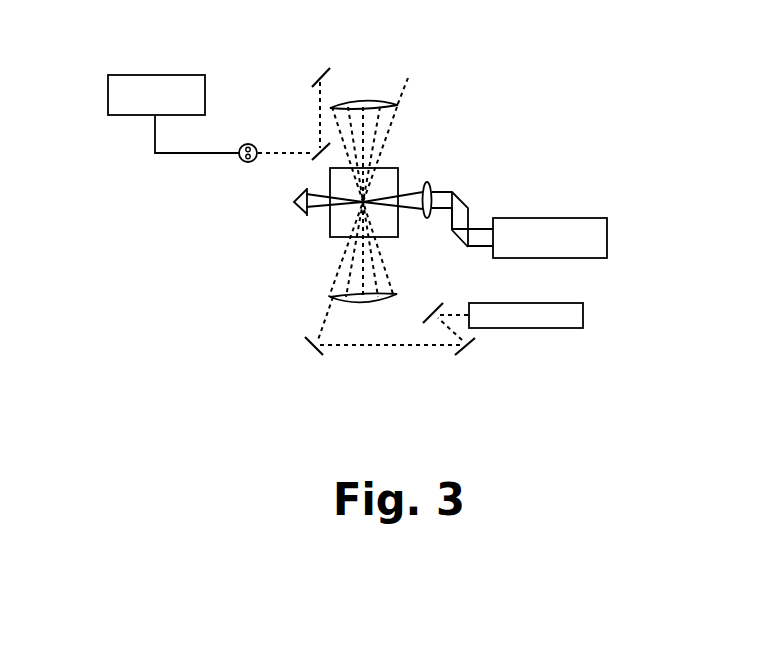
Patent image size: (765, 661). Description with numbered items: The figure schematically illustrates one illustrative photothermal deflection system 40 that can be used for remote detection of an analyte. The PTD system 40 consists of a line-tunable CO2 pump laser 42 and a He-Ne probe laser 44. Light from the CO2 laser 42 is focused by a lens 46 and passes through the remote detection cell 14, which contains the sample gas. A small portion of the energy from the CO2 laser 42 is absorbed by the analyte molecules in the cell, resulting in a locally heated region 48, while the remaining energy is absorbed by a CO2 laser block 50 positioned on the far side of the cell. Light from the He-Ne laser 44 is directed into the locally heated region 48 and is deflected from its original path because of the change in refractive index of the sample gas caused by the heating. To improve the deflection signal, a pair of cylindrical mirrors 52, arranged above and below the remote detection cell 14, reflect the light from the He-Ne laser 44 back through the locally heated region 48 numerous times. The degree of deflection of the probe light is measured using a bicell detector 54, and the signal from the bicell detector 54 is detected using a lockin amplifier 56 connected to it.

The photothermal deflection system 40 is at (538, 59).
The lockin amplifier 56 is at (124, 74).
The bicell detector 54 is at (242, 161).
The cylindrical mirrors 52 is at (396, 104).
The locally heated region 48 is at (362, 203).
The remote detection cell 14 is at (399, 168).
The CO2 laser block 50 is at (301, 208).
The lens 46 is at (431, 183).
The CO2 laser 42 is at (578, 218).
The He-Ne laser 44 is at (535, 327).